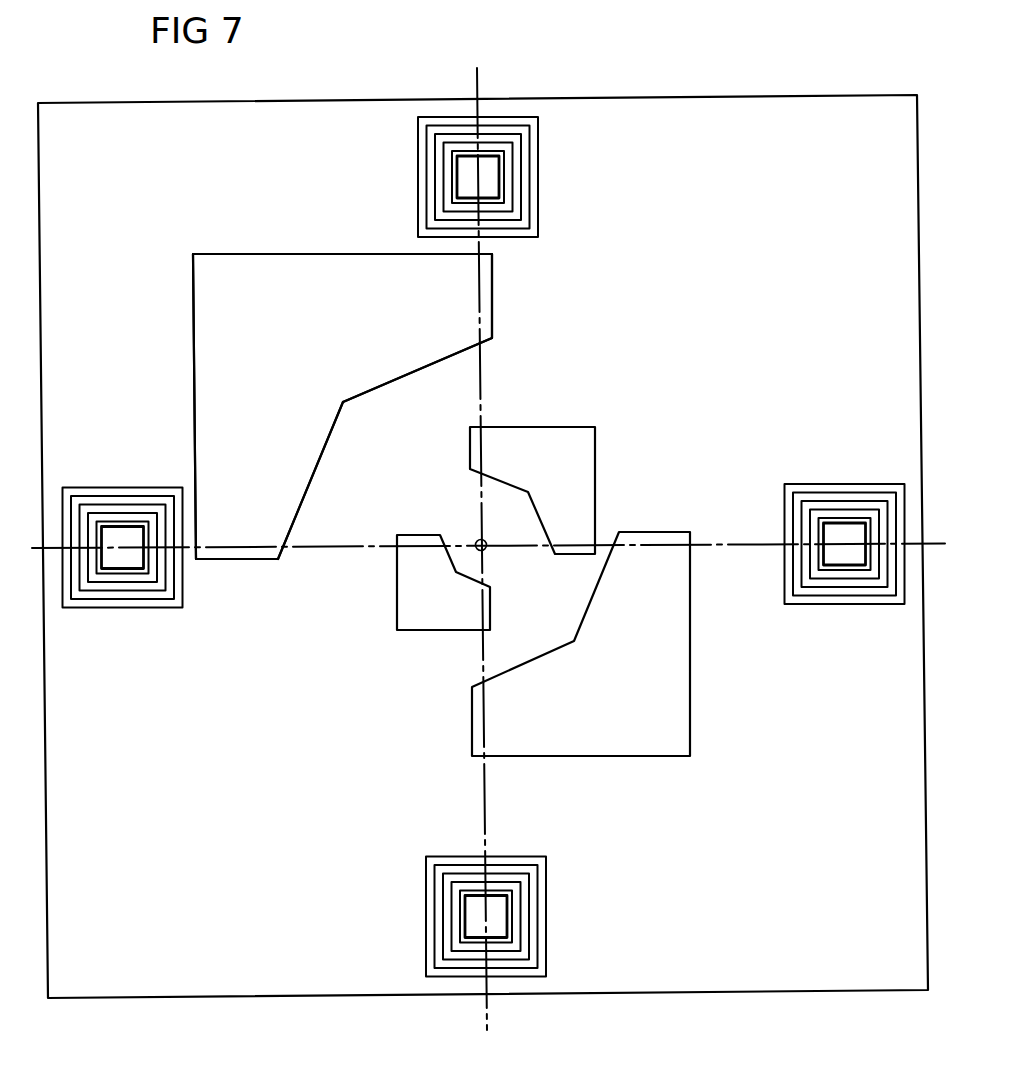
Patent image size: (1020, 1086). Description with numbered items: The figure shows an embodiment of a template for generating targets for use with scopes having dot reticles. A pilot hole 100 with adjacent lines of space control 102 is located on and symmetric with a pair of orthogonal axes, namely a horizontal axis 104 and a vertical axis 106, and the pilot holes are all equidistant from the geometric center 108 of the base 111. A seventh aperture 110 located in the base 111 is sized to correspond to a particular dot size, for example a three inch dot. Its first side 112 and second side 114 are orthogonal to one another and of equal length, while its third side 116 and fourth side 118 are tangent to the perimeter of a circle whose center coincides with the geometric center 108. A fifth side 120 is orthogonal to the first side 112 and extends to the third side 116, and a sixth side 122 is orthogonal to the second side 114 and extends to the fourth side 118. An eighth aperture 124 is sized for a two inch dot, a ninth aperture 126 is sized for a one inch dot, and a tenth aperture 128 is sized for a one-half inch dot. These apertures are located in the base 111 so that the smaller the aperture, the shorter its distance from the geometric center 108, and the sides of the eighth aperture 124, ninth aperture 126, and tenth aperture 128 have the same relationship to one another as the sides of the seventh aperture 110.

The pilot hole 100 is at (487, 178).
The lines of space control 102 is at (515, 203).
The horizontal axis 104 is at (713, 544).
The vertical axis 106 is at (483, 792).
The geometric center 108 is at (485, 548).
The seventh aperture 110 is at (302, 373).
The base 111 is at (157, 176).
The first side 112 is at (238, 252).
The second side 114 is at (192, 356).
The third side 116 is at (392, 381).
The fourth side 118 is at (315, 472).
The fifth side 120 is at (497, 317).
The sixth side 122 is at (230, 560).
The eighth aperture 124 is at (641, 680).
The ninth aperture 126 is at (576, 492).
The tenth aperture 128 is at (455, 611).